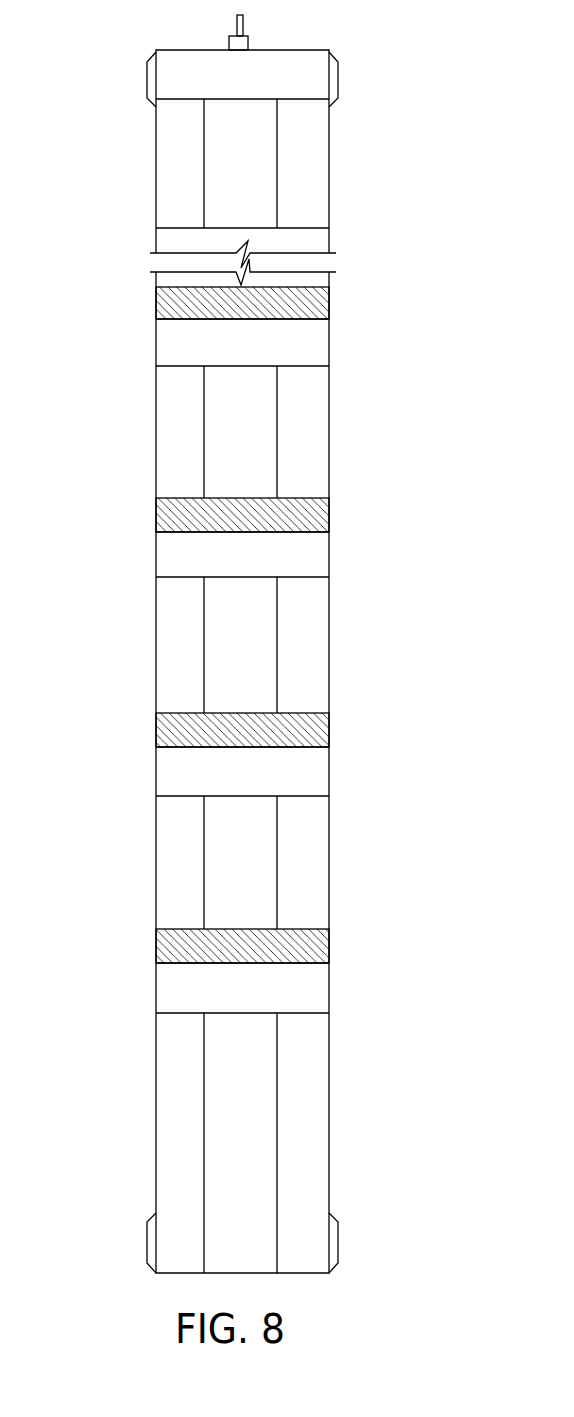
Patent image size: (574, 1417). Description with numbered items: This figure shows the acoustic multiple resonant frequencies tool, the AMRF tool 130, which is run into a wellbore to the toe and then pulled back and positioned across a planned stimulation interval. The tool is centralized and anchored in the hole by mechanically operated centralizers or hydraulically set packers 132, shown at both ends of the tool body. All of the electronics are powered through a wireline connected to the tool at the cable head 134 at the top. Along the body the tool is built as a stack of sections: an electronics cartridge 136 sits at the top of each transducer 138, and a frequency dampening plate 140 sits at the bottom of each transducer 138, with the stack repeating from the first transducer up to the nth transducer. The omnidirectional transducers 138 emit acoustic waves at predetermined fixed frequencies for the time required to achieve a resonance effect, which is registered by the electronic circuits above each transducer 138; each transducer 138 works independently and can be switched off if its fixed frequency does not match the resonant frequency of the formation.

The AMRF tool 130 is at (329, 1180).
The packers 132 is at (147, 80).
The cable head 134 is at (237, 26).
The electronics cartridge 136 is at (172, 88).
The transducer 138 is at (255, 160).
The frequency dampening plate 140 is at (300, 297).